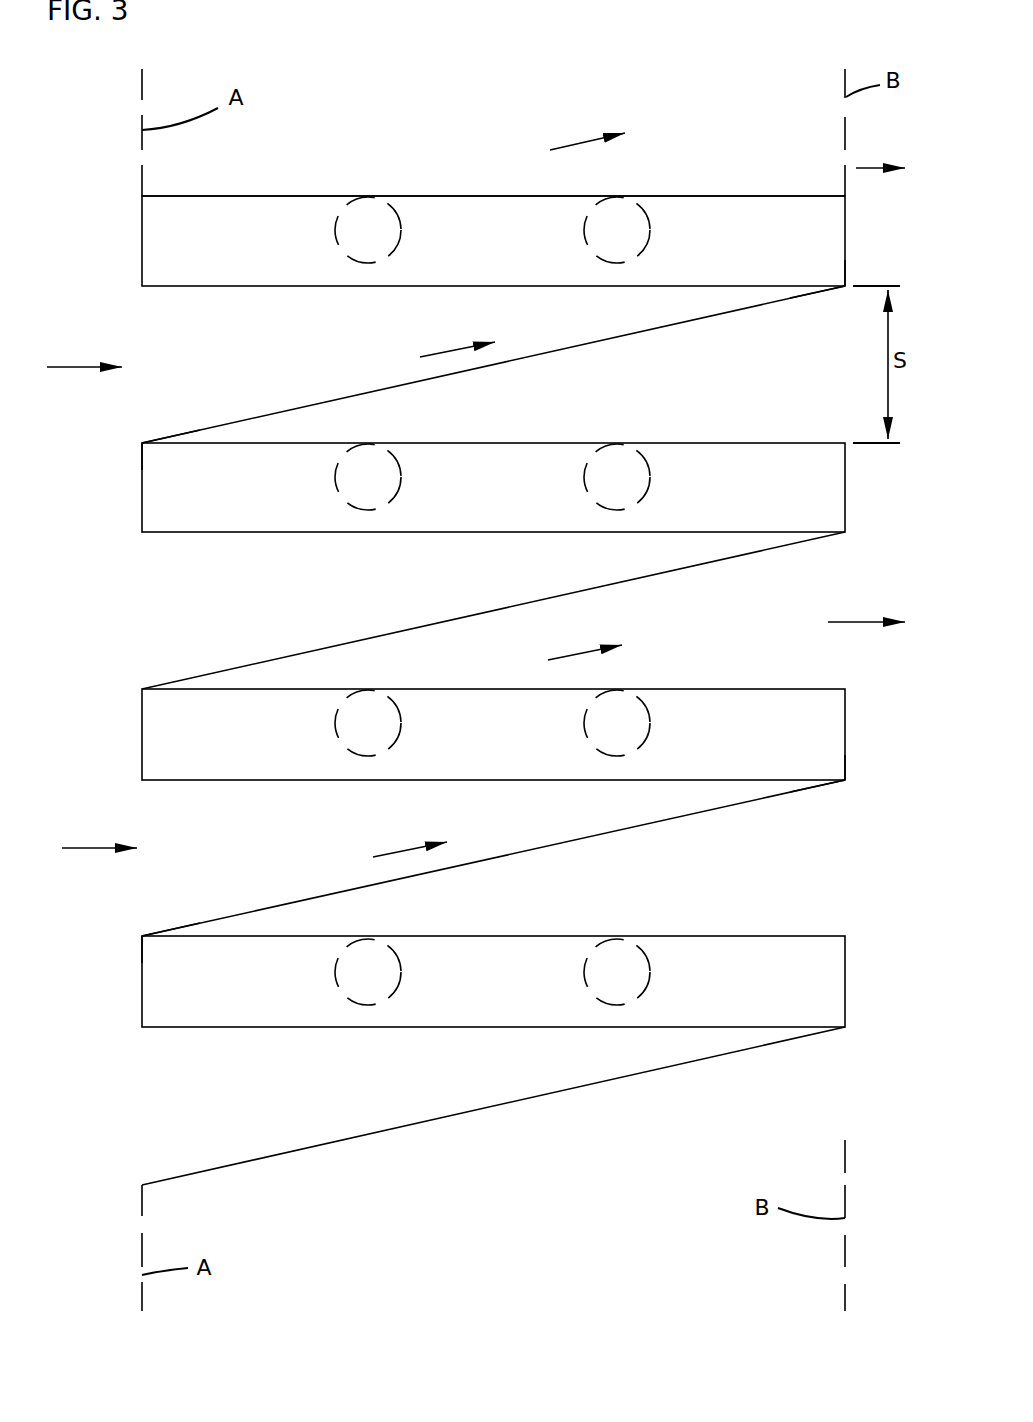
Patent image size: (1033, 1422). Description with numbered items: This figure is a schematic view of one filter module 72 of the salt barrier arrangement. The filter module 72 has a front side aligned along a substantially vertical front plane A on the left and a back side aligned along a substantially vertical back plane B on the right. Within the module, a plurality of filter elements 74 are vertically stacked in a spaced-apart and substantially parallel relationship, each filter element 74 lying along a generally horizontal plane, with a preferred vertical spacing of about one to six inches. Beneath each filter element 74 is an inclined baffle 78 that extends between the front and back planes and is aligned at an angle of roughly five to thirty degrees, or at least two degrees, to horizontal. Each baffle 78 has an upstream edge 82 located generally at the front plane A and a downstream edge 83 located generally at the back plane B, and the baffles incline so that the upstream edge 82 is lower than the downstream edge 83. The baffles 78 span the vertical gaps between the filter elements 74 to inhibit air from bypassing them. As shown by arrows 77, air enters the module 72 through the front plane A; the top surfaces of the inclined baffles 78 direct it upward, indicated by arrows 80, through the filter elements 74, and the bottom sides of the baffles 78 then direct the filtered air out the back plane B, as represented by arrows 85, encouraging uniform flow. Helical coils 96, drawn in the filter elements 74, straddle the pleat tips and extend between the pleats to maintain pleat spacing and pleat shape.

The filter module 72 is at (727, 187).
The filter element 74 is at (235, 196).
The arrows 77 is at (85, 848).
The inclined baffle 78 is at (688, 322).
The arrows 80 is at (572, 140).
The upstream edge 82 is at (143, 443).
The downstream edge 83 is at (845, 288).
The arrows 85 is at (868, 168).
The helical coil 96 is at (400, 220).